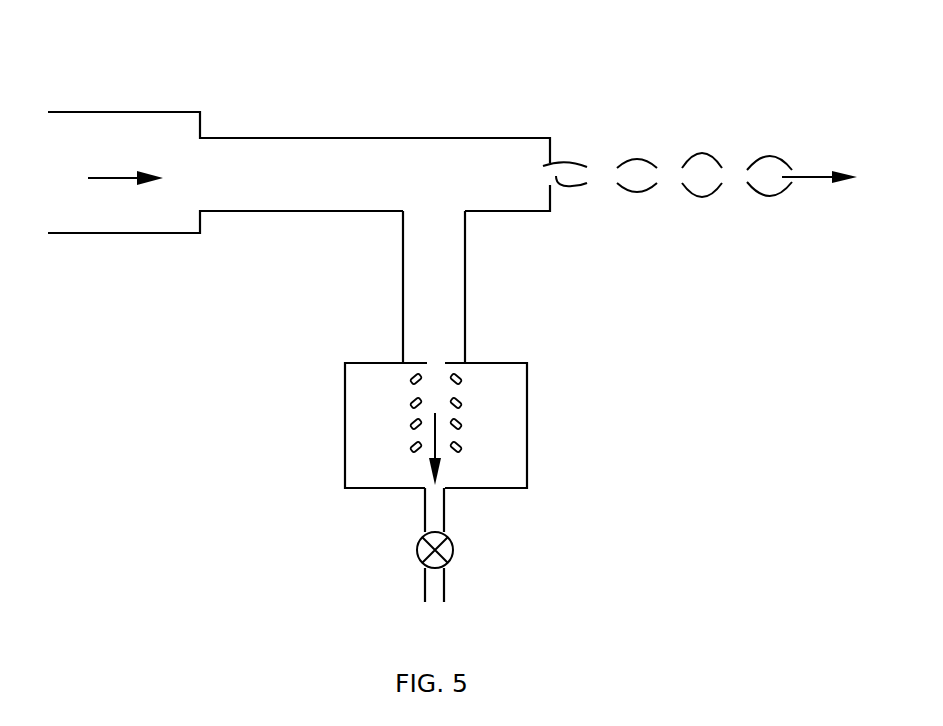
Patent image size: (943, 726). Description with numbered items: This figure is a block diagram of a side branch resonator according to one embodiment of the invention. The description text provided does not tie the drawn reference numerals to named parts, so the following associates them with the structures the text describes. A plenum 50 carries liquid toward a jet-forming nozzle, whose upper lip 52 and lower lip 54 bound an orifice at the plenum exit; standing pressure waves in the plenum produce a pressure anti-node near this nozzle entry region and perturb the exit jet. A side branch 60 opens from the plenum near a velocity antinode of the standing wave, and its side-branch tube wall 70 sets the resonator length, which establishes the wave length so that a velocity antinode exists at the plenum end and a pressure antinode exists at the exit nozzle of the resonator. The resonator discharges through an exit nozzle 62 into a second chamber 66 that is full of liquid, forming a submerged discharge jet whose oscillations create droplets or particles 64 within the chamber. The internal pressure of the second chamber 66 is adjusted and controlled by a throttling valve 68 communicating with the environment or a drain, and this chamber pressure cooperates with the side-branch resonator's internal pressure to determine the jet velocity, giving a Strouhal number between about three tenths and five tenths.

The fluid conduit / duct 50 is at (338, 161).
The upper orifice lip 52 is at (545, 165).
The lower orifice lip 54 is at (568, 181).
The branch passage 60 is at (310, 267).
The inlet opening of chamber 62 is at (433, 362).
The droplets / particles 64 is at (462, 448).
The collection chamber 66 is at (527, 385).
The valve 68 is at (453, 542).
The branch conduit wall 70 is at (420, 312).